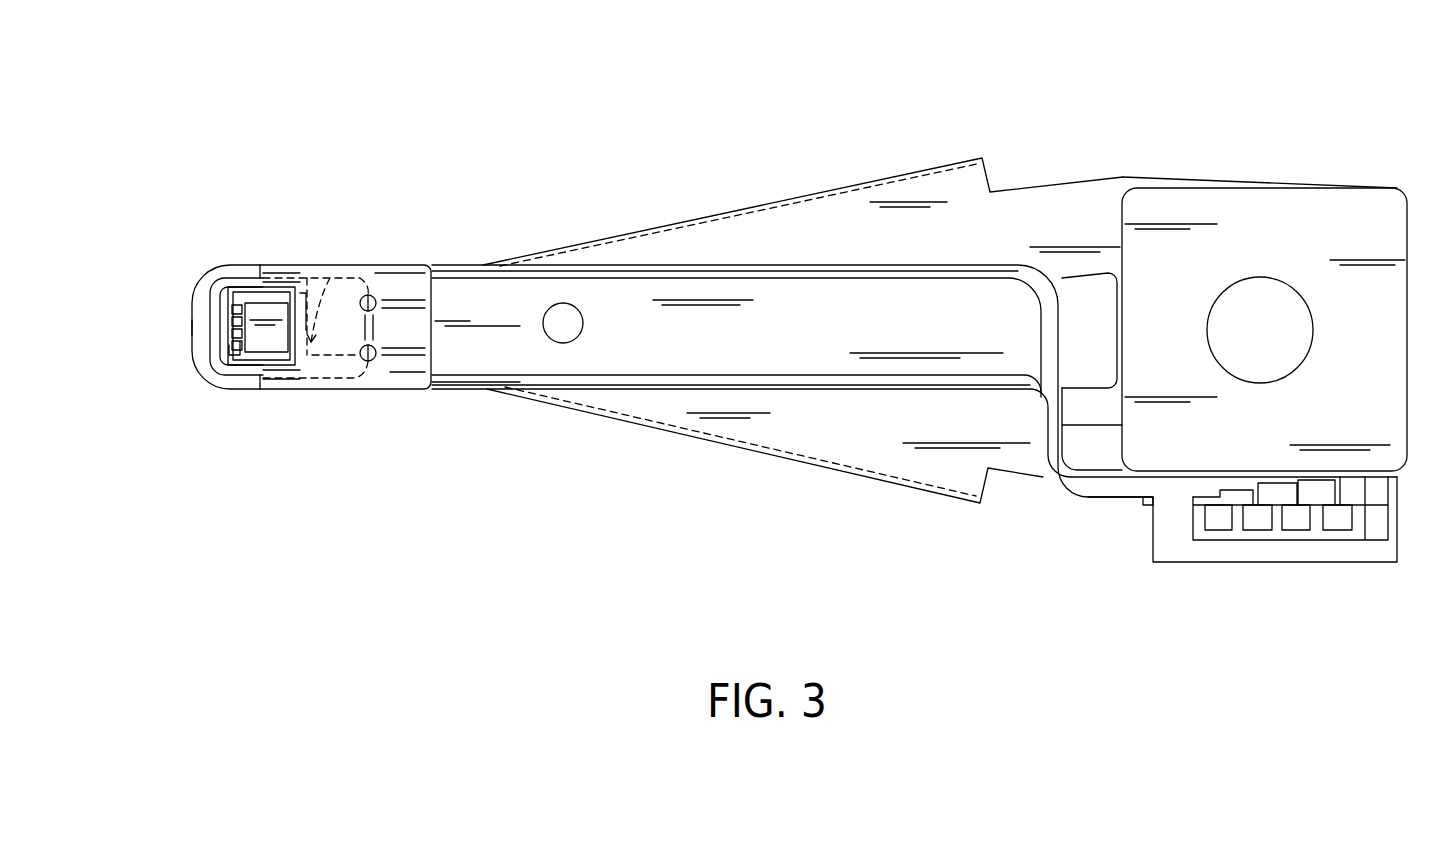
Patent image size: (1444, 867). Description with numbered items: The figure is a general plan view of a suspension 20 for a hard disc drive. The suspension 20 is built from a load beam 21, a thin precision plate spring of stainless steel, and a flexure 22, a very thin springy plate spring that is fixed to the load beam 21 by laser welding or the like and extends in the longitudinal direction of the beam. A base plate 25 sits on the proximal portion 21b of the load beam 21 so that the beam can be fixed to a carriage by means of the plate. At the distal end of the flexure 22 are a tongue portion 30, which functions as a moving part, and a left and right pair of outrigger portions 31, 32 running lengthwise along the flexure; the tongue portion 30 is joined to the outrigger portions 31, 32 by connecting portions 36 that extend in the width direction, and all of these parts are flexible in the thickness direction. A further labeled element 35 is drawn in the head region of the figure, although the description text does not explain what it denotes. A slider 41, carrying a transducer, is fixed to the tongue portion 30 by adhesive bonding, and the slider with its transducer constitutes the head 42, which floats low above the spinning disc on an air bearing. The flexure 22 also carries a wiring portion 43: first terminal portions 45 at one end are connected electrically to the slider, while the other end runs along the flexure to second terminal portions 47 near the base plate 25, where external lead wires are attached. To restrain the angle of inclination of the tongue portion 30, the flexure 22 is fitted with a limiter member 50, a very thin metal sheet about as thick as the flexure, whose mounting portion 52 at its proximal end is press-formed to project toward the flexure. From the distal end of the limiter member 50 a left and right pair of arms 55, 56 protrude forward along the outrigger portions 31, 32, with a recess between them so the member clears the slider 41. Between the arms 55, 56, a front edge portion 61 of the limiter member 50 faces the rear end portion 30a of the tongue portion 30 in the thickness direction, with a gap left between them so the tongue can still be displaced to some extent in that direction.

The suspension 20 is at (572, 139).
The load beam 21 is at (797, 220).
The proximal portion 21b is at (1285, 182).
The flexure 22 is at (517, 355).
The base plate 25 is at (1205, 202).
The tongue portion 30 is at (252, 300).
The rear end portion 30a is at (333, 270).
The outrigger portion 31 is at (256, 268).
The outrigger portion 32 is at (254, 380).
The terminal pads 35 is at (217, 325).
The connecting portions 36 is at (204, 290).
The slider 41 is at (288, 330).
The head 42 is at (195, 343).
The wiring portion 43 is at (441, 385).
The first terminal portions 45 is at (236, 346).
The second terminal portions 47 is at (1218, 527).
The limiter member 50 is at (388, 262).
The mounting portion 52 is at (426, 324).
The arm 55 is at (276, 275).
The arm 56 is at (287, 388).
The front edge portion 61 is at (301, 292).